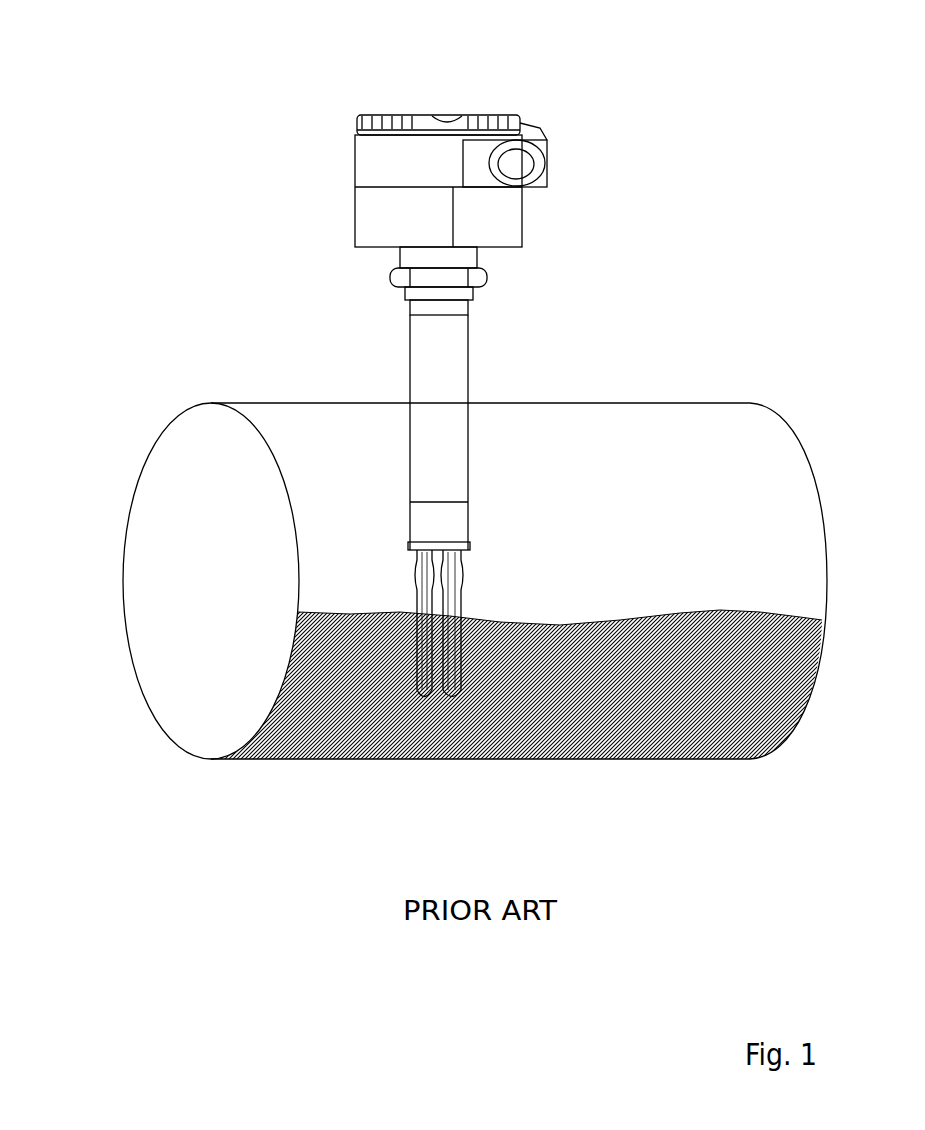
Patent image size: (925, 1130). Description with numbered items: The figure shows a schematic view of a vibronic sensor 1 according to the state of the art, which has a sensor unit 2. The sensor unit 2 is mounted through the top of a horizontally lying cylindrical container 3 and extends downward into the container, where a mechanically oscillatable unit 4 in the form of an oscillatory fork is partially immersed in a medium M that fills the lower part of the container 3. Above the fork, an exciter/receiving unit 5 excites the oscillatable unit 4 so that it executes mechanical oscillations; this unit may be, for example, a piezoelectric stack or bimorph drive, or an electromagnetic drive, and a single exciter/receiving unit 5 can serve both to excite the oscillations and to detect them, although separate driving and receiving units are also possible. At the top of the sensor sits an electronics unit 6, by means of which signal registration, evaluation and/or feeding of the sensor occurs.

The vibronic sensor 1 is at (20, 0).
The sensor unit 2 is at (497, 599).
The container 3 is at (777, 737).
The mechanically oscillatable unit 4 is at (410, 614).
The exciter/receiving unit 5 is at (412, 524).
The electronics unit 6 is at (500, 215).
The medium M is at (557, 708).